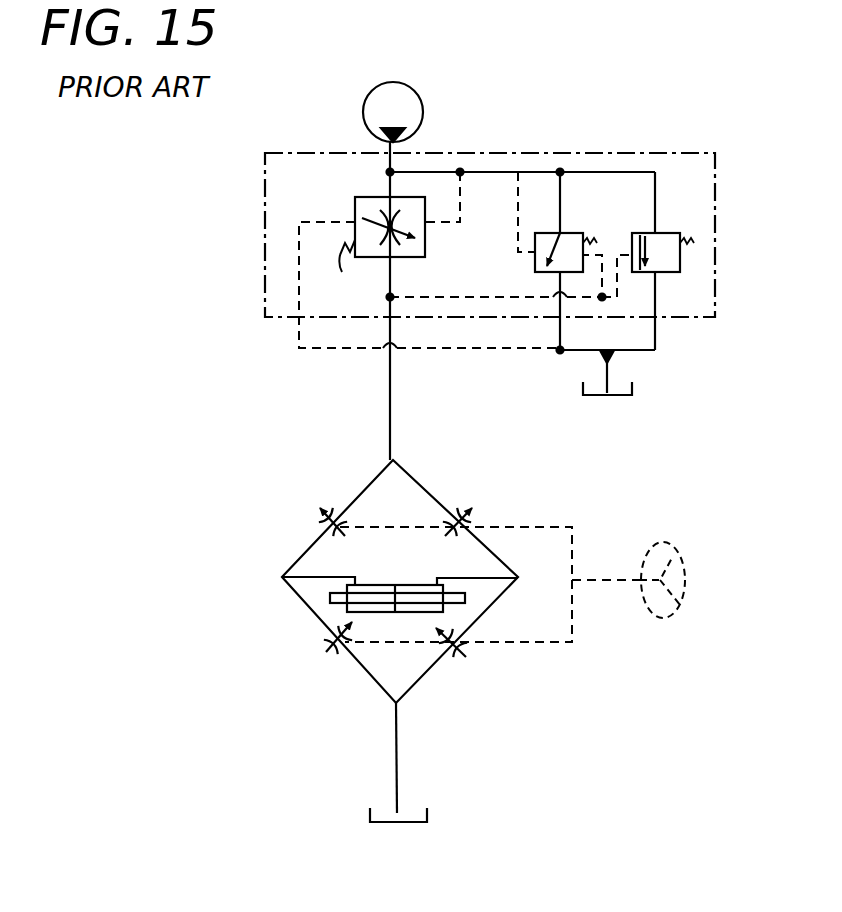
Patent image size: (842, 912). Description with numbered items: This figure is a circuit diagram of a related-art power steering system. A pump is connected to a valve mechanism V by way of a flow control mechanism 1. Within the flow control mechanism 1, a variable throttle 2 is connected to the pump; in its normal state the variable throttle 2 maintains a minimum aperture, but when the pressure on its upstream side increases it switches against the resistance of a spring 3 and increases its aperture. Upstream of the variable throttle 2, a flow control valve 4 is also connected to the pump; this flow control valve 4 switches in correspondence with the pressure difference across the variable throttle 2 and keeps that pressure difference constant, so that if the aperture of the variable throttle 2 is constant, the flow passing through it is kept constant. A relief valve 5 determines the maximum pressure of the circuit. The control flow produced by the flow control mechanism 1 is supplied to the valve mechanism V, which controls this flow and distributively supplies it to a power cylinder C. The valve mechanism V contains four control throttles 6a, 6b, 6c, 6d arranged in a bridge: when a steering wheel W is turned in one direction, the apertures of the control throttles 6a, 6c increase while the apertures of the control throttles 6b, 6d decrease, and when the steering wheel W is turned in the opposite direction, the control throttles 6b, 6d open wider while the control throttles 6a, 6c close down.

The flow control mechanism 1 is at (673, 153).
The variable throttle 2 is at (355, 197).
The spring 3 is at (345, 275).
The flow control valve 4 is at (580, 233).
The relief valve 5 is at (673, 233).
The valve mechanism V is at (433, 452).
The control throttle 6a is at (333, 510).
The control throttle 6b is at (462, 512).
The control throttle 6c is at (455, 660).
The control throttle 6d is at (334, 655).
The power cylinder C is at (398, 585).
The steering wheel W is at (657, 620).